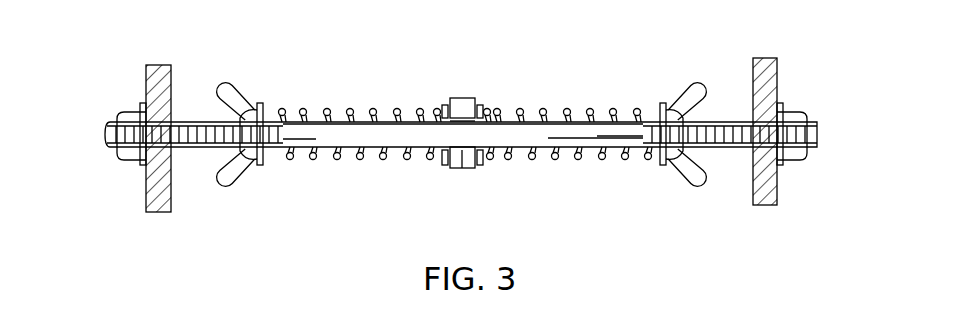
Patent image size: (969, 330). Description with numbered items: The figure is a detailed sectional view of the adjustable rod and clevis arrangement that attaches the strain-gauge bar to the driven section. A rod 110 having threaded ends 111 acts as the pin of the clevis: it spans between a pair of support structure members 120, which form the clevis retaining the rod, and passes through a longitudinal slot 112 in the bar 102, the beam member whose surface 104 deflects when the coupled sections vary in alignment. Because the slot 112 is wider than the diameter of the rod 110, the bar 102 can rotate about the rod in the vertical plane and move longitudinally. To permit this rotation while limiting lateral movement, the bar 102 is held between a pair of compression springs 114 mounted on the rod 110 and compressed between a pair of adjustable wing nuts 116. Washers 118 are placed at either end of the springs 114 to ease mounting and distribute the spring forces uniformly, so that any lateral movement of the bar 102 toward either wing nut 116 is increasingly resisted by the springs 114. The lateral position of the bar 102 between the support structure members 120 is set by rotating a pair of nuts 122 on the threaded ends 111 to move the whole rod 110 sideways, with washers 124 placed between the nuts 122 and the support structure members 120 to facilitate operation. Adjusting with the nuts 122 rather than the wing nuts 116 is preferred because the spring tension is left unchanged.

The bar 102 is at (460, 98).
The surface 104 is at (479, 104).
The rod 110 is at (577, 120).
The threaded ends 111 is at (107, 132).
The longitudinal slot 112 is at (461, 169).
The compression springs 114 is at (338, 160).
The wing nuts 116 is at (224, 90).
The washers 118 is at (260, 166).
The support structure members 120 is at (149, 75).
The nuts 122 is at (139, 113).
The washers 124 is at (140, 165).